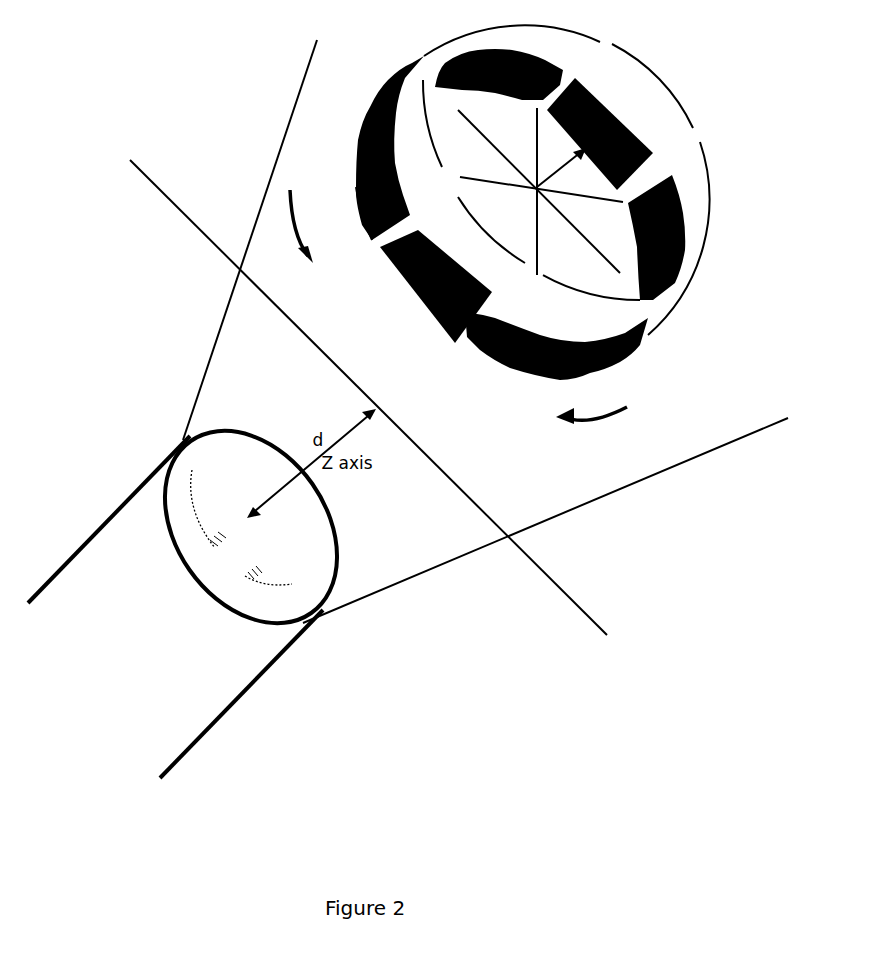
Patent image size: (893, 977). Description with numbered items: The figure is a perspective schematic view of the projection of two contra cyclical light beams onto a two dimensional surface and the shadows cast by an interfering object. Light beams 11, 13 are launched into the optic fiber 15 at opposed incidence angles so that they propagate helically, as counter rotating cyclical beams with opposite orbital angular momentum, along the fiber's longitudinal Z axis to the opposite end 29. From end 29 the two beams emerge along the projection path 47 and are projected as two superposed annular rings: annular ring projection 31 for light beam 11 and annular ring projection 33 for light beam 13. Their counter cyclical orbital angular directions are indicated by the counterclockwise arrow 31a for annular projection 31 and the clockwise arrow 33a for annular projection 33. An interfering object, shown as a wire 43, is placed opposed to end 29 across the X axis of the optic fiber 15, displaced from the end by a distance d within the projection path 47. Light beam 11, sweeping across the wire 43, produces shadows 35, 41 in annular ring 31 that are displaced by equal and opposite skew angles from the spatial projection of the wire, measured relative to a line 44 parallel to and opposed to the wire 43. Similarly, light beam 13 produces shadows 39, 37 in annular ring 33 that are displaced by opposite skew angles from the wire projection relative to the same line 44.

The light beam 11 is at (378, 100).
The light beam 13 is at (700, 280).
The optic fiber 15 is at (193, 745).
The opposite end of the fiber optic 29 is at (187, 438).
The annular ring projection 31 is at (342, 174).
The counterclockwise arrow 31a is at (300, 240).
The annular ring projection 33 is at (722, 242).
The clockwise arrow 33a is at (590, 420).
The shadow 35 is at (377, 245).
The shadow 37 is at (457, 343).
The shadow 39 is at (605, 43).
The shadow 41 is at (698, 133).
The wire 43 is at (590, 620).
The line 44 is at (610, 268).
The projection path 47 is at (393, 555).